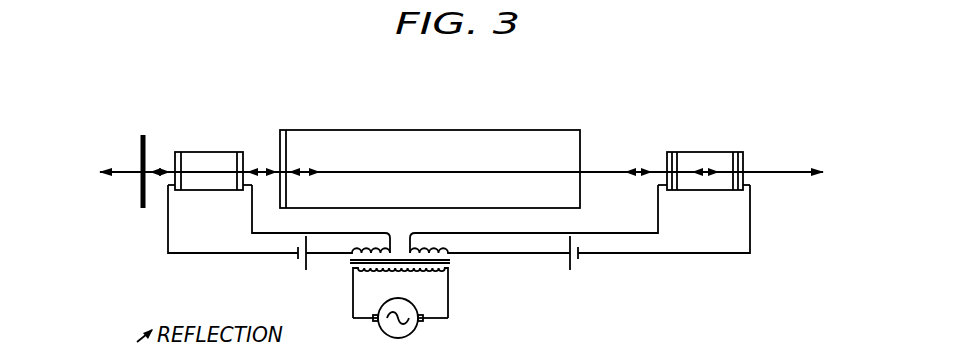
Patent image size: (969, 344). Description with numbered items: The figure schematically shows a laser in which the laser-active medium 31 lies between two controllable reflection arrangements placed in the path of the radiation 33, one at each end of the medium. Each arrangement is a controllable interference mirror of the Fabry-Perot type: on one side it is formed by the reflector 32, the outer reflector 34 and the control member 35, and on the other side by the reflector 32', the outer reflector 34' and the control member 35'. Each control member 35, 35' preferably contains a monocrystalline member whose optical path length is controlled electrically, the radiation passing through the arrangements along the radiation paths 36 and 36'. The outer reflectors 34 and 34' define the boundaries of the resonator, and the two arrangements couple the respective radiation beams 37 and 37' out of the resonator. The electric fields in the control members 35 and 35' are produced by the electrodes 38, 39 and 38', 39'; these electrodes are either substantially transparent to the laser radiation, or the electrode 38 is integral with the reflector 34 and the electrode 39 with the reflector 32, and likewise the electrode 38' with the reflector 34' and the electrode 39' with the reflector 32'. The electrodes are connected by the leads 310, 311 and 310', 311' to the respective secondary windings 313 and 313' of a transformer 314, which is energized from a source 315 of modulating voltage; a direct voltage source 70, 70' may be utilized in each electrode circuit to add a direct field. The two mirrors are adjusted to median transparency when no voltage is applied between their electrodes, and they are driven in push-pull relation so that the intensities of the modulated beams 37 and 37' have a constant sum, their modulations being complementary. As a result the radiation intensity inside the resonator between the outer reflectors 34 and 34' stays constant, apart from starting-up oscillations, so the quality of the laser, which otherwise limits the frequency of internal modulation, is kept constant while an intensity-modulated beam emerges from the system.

The laser-active medium 31 is at (368, 130).
The reflector 32 is at (205, 131).
The reflector 32' is at (561, 142).
The radiation 33 is at (485, 150).
The outer reflector 34 is at (95, 191).
The outer reflector 34' is at (813, 151).
The control member 35 is at (185, 140).
The control member 35' is at (742, 122).
The radiation path 36 is at (207, 156).
The radiation path 36' is at (705, 156).
The radiation beam 37 is at (117, 159).
The radiation beam 37' is at (783, 193).
The electrode 38 is at (189, 206).
The electrode 38' is at (731, 216).
The electrode 39 is at (262, 205).
The electrode 39' is at (683, 208).
The direct voltage source 70 is at (287, 262).
The direct voltage source 70' is at (593, 259).
The lead 310 is at (233, 233).
The lead 310' is at (664, 236).
The lead 311 is at (300, 219).
The lead 311' is at (534, 219).
The secondary winding 313 is at (348, 231).
The secondary winding 313' is at (489, 231).
The transformer 314 is at (460, 291).
The source of modulating voltage 315 is at (421, 332).